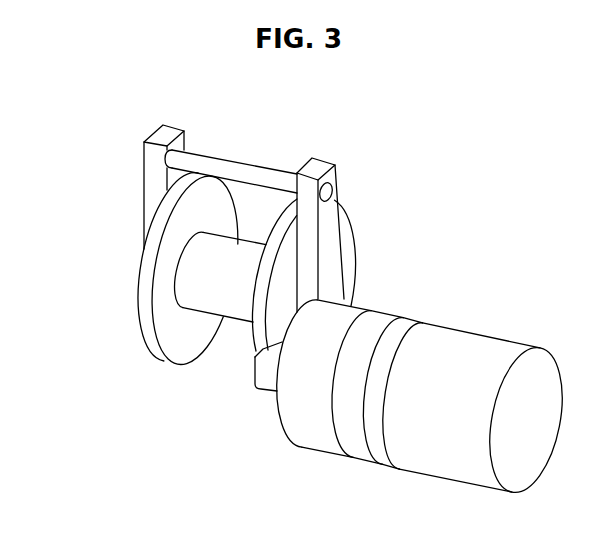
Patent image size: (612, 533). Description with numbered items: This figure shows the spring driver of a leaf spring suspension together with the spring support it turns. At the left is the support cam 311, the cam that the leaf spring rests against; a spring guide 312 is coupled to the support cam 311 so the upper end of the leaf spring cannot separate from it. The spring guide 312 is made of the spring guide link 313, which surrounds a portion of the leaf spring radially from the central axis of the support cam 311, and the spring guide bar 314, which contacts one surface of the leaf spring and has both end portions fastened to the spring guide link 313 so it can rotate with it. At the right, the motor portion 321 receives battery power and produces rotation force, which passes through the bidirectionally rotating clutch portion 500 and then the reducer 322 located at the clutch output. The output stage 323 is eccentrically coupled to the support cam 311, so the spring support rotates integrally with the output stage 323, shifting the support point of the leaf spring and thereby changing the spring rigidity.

The support cam 311 is at (163, 327).
The spring guide 312 is at (321, 168).
The spring guide link 313 is at (303, 190).
The spring guide bar 314 is at (250, 170).
The motor portion 321 is at (482, 347).
The reducer 322 is at (328, 306).
The output stage 323 is at (260, 378).
The clutch portion 500 is at (387, 318).